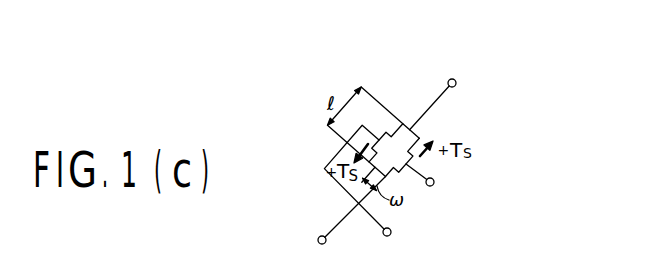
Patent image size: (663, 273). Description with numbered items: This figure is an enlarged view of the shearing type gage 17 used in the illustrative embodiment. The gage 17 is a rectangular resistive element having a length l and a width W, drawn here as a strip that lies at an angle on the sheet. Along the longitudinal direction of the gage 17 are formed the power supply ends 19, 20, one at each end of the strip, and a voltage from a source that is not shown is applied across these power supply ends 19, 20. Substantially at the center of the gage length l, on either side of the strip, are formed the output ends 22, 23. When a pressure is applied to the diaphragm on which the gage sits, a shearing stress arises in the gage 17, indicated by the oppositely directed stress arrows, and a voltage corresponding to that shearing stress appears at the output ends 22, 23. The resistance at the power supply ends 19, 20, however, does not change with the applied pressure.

The shearing type gage 17 is at (318, 127).
The power supply end 19 is at (452, 79).
The power supply end 20 is at (318, 242).
The output end 22 is at (433, 185).
The output end 23 is at (389, 236).